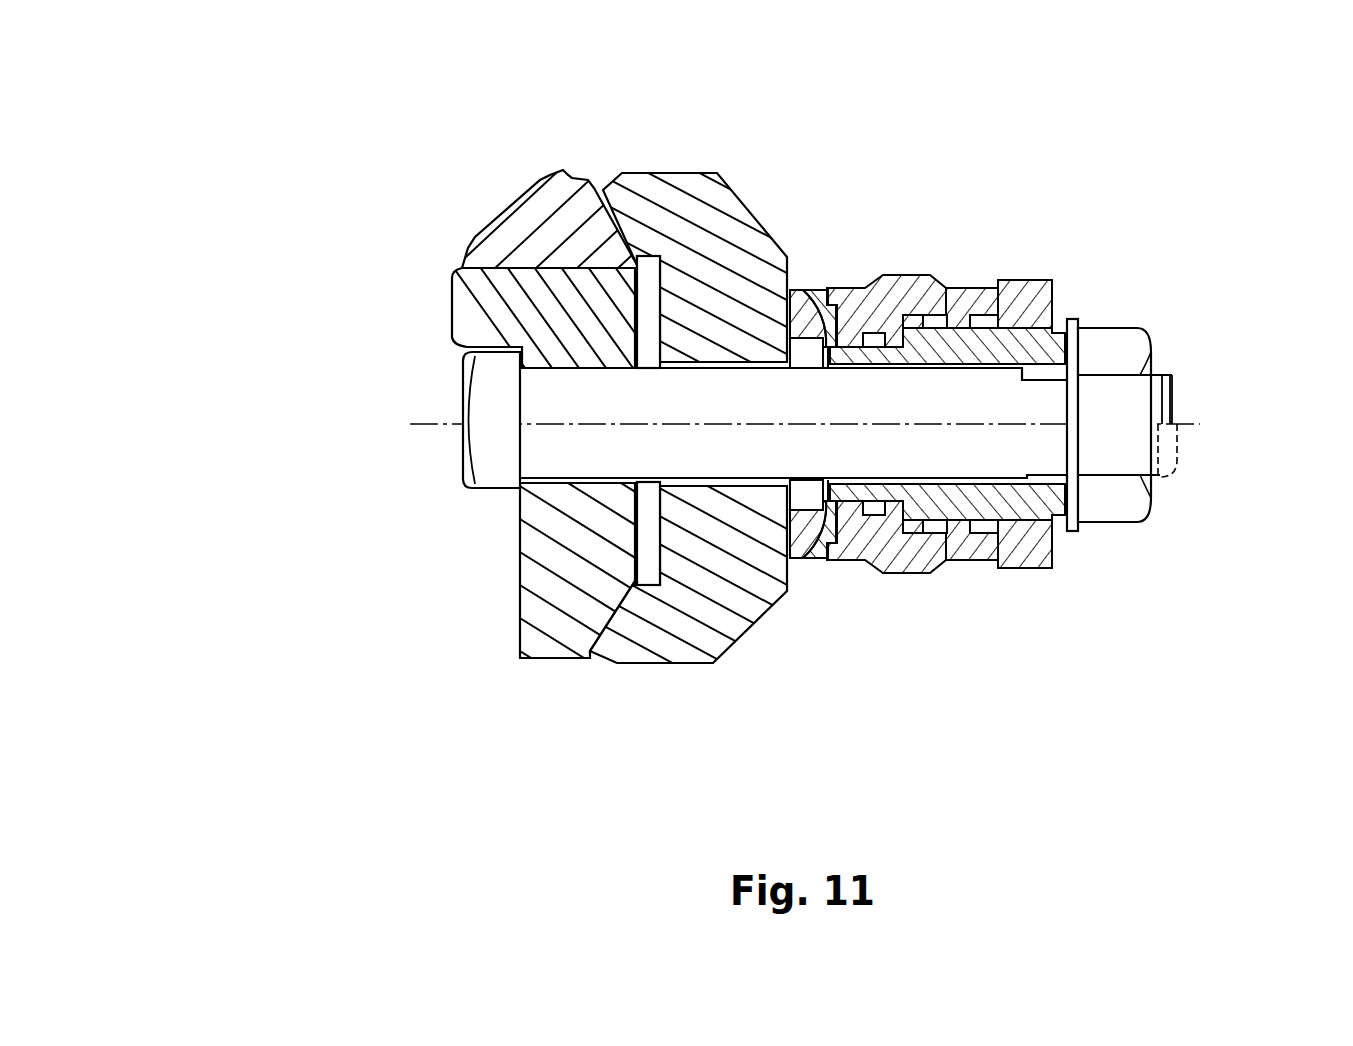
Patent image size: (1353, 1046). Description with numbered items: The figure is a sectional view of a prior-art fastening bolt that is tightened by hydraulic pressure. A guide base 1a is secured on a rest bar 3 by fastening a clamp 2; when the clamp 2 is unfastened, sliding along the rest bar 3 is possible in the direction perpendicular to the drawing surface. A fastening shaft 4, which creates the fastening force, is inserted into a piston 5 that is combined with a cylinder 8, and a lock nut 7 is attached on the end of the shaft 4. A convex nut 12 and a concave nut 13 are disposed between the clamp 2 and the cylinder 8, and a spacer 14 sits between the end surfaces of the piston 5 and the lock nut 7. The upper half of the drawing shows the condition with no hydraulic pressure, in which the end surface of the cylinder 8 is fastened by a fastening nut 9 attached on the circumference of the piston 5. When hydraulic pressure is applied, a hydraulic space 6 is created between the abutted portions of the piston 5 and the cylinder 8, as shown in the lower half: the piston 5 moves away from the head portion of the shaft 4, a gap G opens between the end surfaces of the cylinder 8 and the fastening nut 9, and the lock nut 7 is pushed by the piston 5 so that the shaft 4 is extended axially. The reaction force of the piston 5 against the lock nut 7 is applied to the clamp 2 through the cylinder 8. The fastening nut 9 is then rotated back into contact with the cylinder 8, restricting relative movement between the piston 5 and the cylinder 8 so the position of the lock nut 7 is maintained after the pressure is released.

The guide base 1a is at (515, 208).
The clamp 2 is at (680, 190).
The rest bar 3 is at (530, 600).
The fastening shaft 4 is at (538, 450).
The piston 5 is at (955, 312).
The hydraulic space 6 is at (900, 567).
The lock nut 7 is at (1140, 345).
The cylinder 8 is at (907, 282).
The fastening nut 9 is at (1045, 282).
The convex nut 12 is at (800, 300).
The concave nut 13 is at (813, 553).
The spacer 14 is at (1095, 532).
The gap G is at (1000, 570).